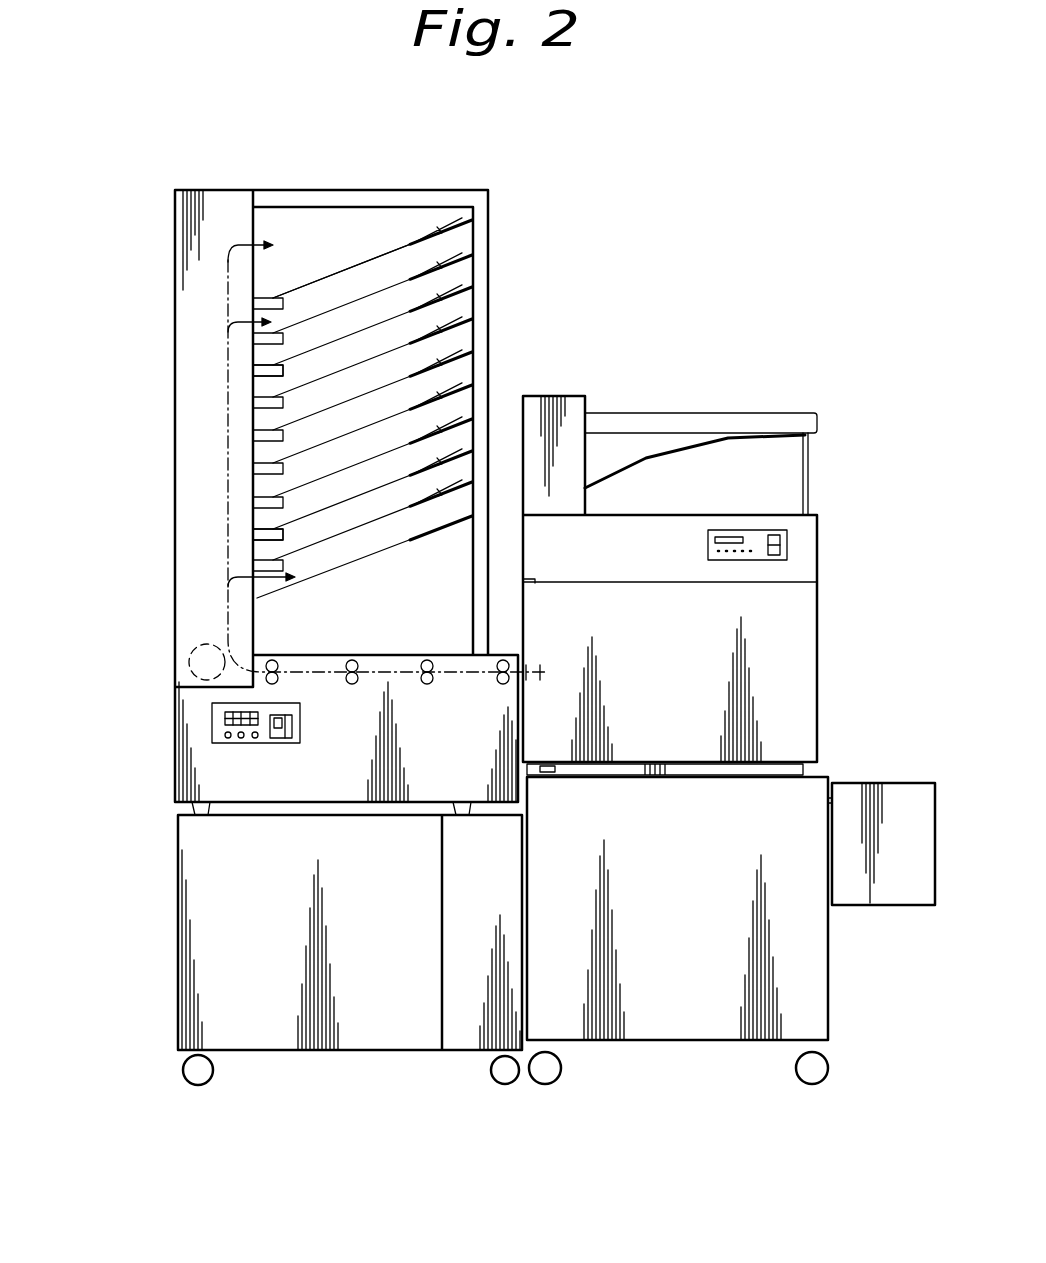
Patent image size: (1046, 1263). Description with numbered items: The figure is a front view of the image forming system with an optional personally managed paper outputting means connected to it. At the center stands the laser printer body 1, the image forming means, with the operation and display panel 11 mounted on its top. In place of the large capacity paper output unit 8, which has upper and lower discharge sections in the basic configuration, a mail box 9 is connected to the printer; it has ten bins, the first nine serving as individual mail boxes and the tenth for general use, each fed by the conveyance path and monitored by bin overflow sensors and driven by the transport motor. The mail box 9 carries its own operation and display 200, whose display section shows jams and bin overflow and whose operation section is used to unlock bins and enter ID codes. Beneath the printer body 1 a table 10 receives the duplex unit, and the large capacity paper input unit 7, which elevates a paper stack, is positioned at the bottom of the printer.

The laser printer body 1 is at (817, 672).
The large capacity paper input unit 7 is at (884, 783).
The large capacity paper output unit 8 is at (692, 413).
The mail box 9 is at (173, 495).
The table 10 is at (828, 990).
The operation and display panel 11 is at (790, 552).
The operation and display 200 is at (212, 730).